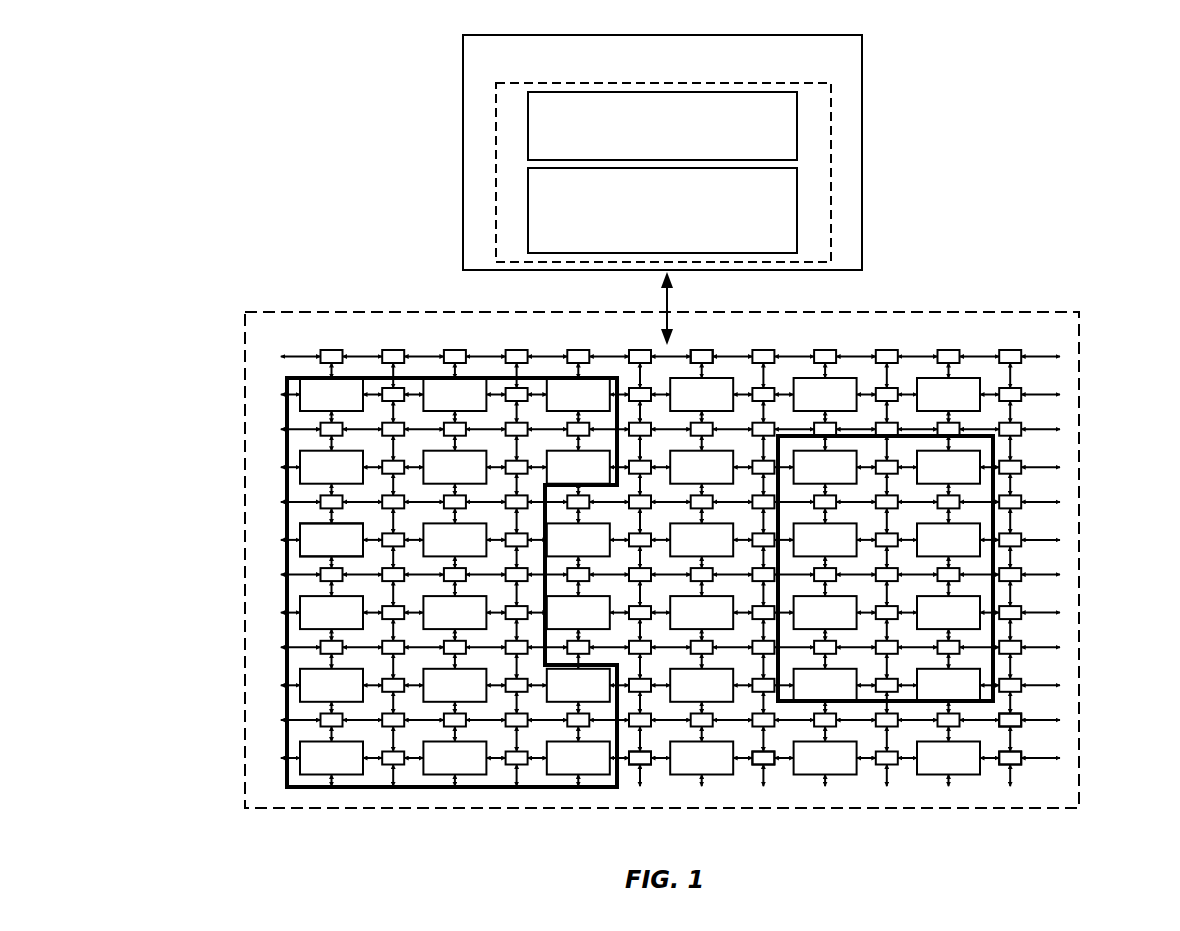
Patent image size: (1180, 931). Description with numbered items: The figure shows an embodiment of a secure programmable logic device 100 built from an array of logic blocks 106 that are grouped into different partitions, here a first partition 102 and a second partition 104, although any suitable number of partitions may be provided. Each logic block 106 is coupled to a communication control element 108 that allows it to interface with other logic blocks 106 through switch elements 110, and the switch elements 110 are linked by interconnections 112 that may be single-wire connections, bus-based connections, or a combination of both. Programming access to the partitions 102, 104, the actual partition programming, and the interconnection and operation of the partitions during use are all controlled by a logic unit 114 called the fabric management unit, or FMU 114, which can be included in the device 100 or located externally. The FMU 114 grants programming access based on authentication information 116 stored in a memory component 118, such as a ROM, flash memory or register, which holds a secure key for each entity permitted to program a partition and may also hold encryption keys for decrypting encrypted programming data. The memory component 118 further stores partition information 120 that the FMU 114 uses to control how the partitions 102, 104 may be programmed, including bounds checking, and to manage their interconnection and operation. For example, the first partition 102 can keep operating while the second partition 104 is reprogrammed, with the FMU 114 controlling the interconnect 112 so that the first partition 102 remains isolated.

The secure programmable logic device 100 is at (662, 560).
The first partition 102 is at (355, 787).
The second partition 104 is at (995, 512).
The logic block 106 is at (960, 396).
The communication control element 108 is at (738, 758).
The switch element 110 is at (1012, 721).
The interconnection 112 is at (727, 353).
The logic unit (fabric management unit, FMU) 114 is at (662, 152).
The authentication information 116 is at (662, 210).
The memory component 118 is at (831, 118).
The partition information 120 is at (662, 126).